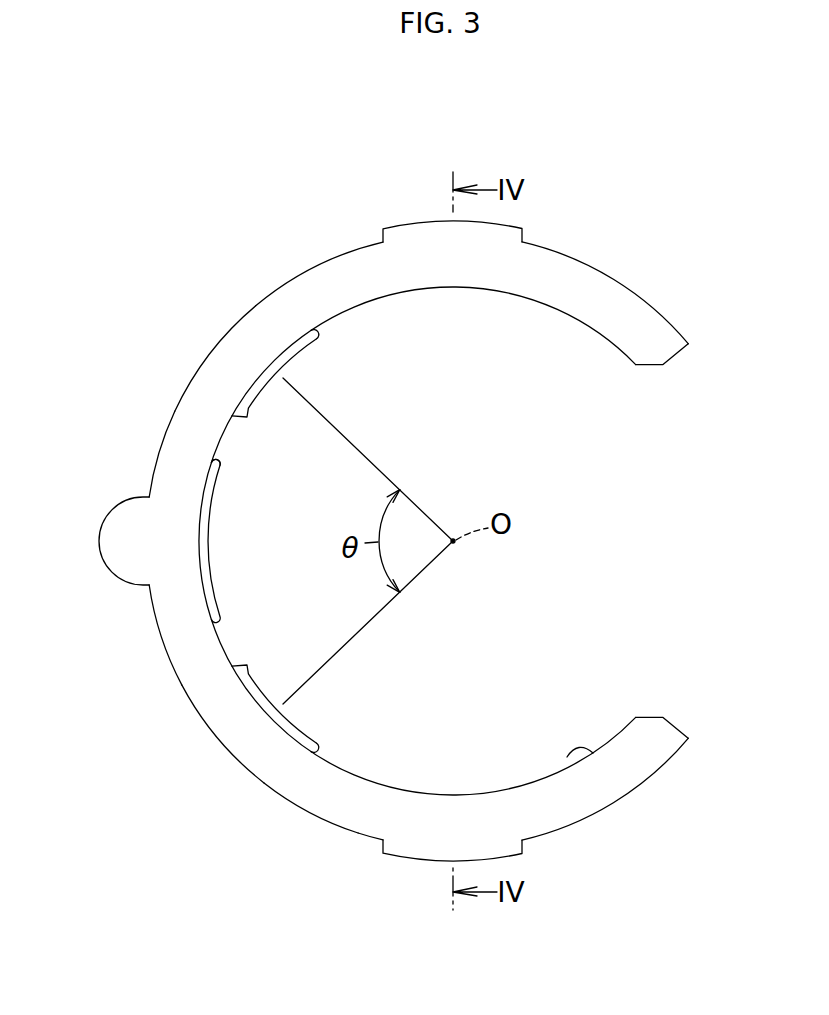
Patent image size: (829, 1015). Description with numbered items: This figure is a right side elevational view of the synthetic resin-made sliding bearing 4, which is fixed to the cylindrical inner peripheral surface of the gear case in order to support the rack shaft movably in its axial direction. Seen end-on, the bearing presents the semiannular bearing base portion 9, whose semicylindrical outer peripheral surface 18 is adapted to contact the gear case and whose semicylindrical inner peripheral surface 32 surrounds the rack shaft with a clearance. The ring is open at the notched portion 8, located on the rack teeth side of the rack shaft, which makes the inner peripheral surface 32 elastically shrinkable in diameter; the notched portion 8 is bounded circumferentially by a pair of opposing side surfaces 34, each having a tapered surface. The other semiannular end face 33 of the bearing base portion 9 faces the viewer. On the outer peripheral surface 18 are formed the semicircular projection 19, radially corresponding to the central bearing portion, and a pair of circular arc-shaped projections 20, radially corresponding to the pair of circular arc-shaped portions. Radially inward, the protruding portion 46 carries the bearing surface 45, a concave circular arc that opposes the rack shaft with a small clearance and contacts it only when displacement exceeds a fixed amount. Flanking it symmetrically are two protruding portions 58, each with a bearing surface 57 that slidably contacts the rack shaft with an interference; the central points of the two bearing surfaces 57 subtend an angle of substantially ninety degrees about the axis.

The sliding bearing 4 is at (203, 778).
The notched portion 8 is at (645, 523).
The bearing base portion 9 is at (227, 363).
The outer peripheral surface 18 is at (162, 634).
The semicircular projection 19 is at (122, 541).
The circular arc-shaped projections 20 is at (492, 238).
The inner peripheral surface 32 is at (567, 757).
The semiannular end face 33 is at (313, 802).
The side surfaces 34 is at (680, 351).
The bearing surface 45 is at (208, 534).
The protruding portion 46 is at (208, 463).
The bearing surface 57 is at (300, 353).
The protruding portion 58 is at (318, 333).